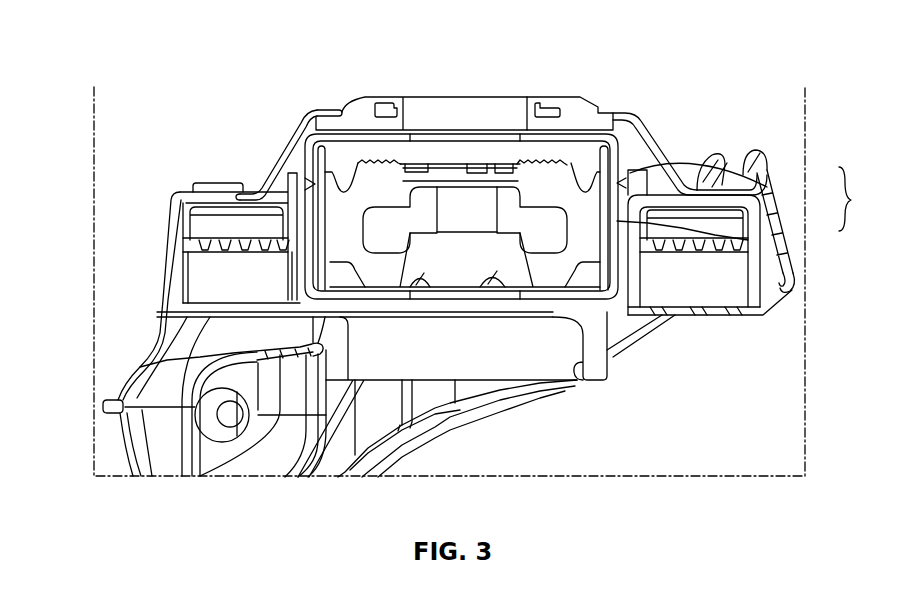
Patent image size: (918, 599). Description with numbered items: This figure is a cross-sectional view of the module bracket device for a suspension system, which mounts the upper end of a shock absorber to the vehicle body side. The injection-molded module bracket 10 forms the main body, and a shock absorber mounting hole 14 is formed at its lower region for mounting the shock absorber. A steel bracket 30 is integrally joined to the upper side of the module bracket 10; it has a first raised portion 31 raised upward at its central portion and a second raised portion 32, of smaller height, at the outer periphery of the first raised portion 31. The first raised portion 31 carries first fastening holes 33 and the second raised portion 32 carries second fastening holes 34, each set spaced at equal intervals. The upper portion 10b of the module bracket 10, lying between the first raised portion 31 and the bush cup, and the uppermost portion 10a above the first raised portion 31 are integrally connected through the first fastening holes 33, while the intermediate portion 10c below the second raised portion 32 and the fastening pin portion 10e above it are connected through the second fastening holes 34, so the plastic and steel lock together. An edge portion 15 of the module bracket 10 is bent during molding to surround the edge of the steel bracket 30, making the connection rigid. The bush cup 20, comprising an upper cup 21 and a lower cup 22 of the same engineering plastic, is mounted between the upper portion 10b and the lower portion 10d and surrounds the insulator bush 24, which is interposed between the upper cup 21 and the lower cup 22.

The module bracket 10 is at (455, 90).
The uppermost portion 10a is at (544, 97).
The upper portion 10b is at (614, 115).
The intermediate portion 10c is at (254, 190).
The lower portion 10d is at (567, 318).
The fastening pin portion 10e is at (200, 183).
The shock absorber mounting hole 14 is at (579, 380).
The edge portion 15 is at (798, 271).
The bush cup 20 is at (747, 211).
The upper cup 21 is at (767, 187).
The lower cup 22 is at (748, 240).
The insulator bush 24 is at (594, 242).
The steel bracket 30 is at (647, 127).
The first raised portion 31 is at (322, 106).
The second raised portion 32 is at (176, 194).
The first fastening holes 33 is at (376, 100).
The second fastening holes 34 is at (228, 180).